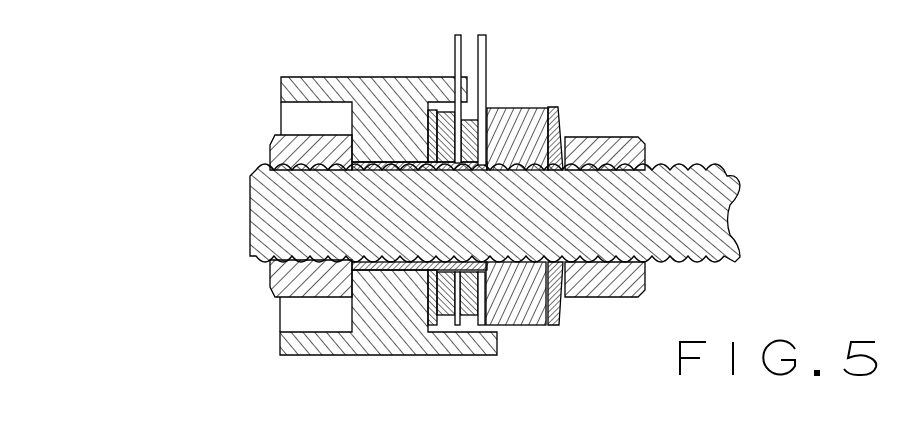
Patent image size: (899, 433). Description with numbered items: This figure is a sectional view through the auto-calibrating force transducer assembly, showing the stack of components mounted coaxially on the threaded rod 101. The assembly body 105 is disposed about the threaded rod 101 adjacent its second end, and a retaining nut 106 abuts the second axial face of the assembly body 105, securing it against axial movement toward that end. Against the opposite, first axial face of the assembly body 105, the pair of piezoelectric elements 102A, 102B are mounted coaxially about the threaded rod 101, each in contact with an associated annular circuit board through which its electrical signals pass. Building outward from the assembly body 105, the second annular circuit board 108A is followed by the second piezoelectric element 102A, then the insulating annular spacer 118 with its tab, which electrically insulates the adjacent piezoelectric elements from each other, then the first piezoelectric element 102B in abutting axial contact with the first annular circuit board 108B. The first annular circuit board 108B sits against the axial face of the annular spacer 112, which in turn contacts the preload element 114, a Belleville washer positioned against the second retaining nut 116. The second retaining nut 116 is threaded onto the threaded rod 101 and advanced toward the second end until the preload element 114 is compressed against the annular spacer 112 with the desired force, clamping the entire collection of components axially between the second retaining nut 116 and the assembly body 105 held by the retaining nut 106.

The threaded rod 101 is at (668, 203).
The assembly body 105 is at (383, 100).
The retaining nut 106 is at (310, 280).
The second annular circuit board 108A is at (440, 293).
The first annular circuit board 108B is at (482, 35).
The second piezoelectric element 102A is at (449, 297).
The first piezoelectric element 102B is at (469, 297).
The annular spacer 112 is at (521, 122).
The preload element 114 is at (560, 127).
The second retaining nut 116 is at (618, 152).
The insulating annular spacer 118 is at (455, 40).